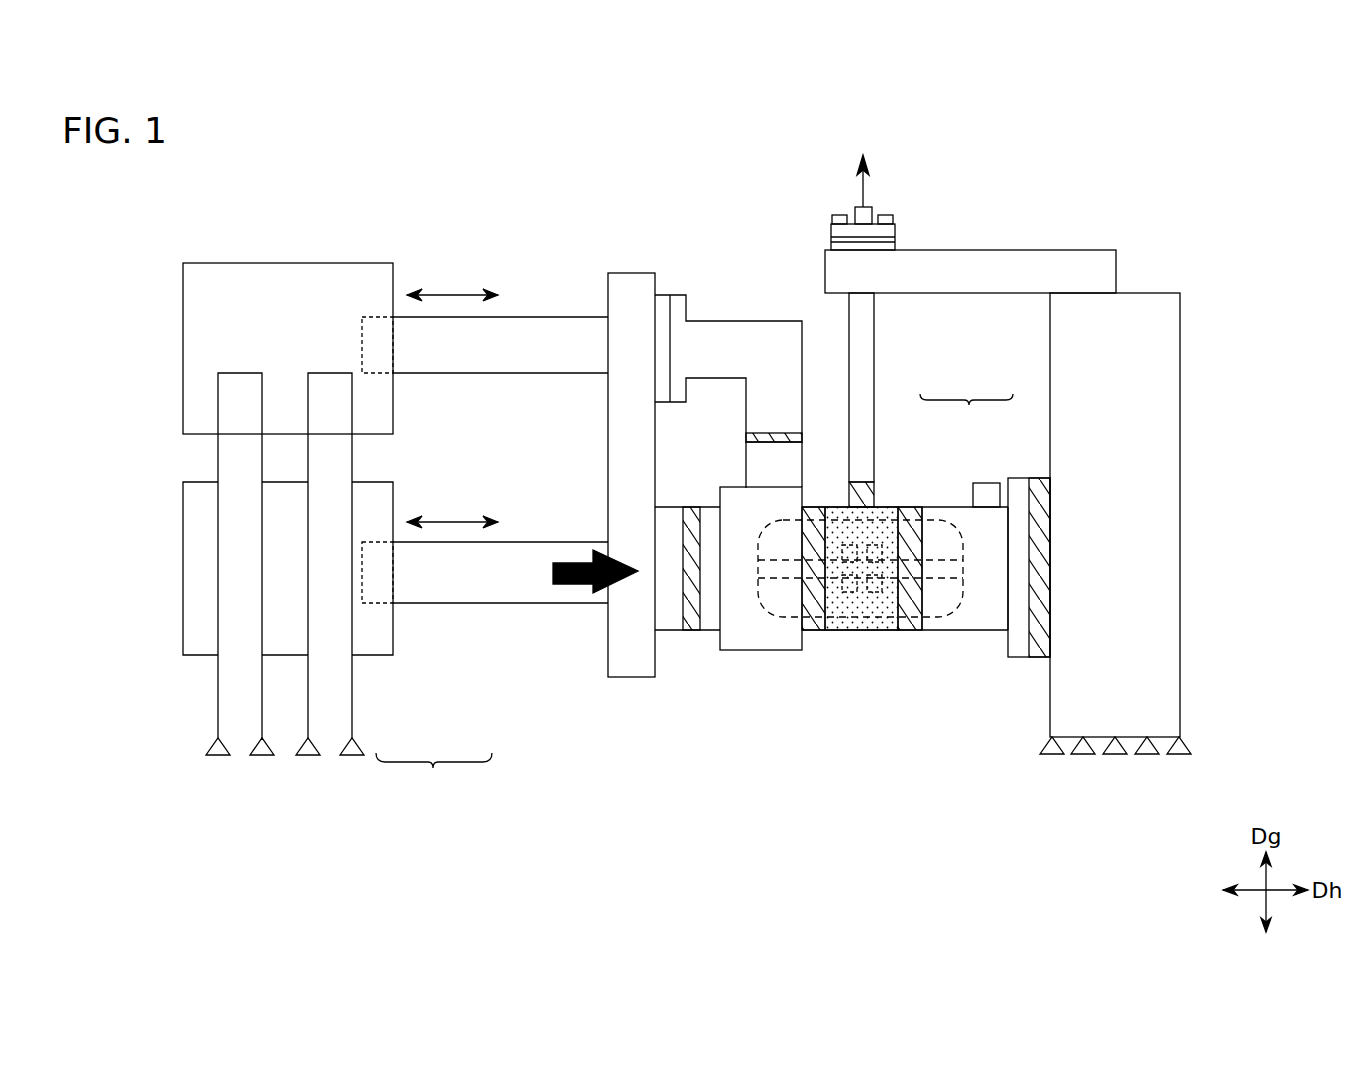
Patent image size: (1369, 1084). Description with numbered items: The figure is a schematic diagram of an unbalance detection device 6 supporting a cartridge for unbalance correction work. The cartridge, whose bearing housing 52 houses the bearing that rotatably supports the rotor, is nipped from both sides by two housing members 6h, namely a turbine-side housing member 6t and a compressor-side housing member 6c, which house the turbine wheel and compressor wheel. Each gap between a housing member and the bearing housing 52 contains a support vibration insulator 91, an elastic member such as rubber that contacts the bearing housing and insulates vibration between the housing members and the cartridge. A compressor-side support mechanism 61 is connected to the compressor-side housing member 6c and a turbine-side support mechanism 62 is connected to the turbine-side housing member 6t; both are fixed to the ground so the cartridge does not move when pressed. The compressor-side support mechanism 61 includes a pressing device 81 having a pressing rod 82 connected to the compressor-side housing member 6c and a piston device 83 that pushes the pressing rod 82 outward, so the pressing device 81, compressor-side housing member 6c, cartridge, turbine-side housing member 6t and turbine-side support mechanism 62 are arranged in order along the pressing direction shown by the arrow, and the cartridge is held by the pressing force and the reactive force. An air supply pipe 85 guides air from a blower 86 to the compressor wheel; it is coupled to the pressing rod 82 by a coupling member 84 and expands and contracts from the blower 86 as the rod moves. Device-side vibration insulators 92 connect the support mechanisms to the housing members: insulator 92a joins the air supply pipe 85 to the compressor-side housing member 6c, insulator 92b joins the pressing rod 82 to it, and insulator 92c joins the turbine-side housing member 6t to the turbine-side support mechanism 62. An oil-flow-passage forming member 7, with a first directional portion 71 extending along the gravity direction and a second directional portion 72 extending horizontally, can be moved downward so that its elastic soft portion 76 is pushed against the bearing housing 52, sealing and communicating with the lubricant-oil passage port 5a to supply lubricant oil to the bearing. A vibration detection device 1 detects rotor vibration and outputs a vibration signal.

The vibration detection device 1 is at (827, 198).
The lubricant-oil passage port 5a is at (875, 521).
The bearing housing 52 is at (862, 632).
The unbalance detection device 6 is at (1037, 112).
The compressor-side housing member 6c is at (755, 650).
The housing members 6h is at (833, 618).
The turbine-side housing member 6t is at (985, 632).
The oil-flow-passage forming member 7 is at (970, 366).
The first directional portion 71 is at (875, 385).
The second directional portion 72 is at (1003, 293).
The soft portion 76 is at (850, 492).
The compressor-side support mechanism 61 is at (463, 195).
The turbine-side support mechanism 62 is at (1186, 195).
The pressing device 81 is at (434, 775).
The pressing rod 82 is at (672, 632).
The piston device 83 is at (370, 656).
The coupling member 84 is at (607, 430).
The air supply pipe 85 is at (730, 321).
The blower 86 is at (290, 263).
The support vibration insulator 91 is at (818, 632).
The device-side vibration insulator 92 is at (872, 207).
The device-side vibration insulator 92a is at (746, 440).
The device-side vibration insulator 92b is at (690, 507).
The device-side vibration insulator 92c is at (1040, 658).